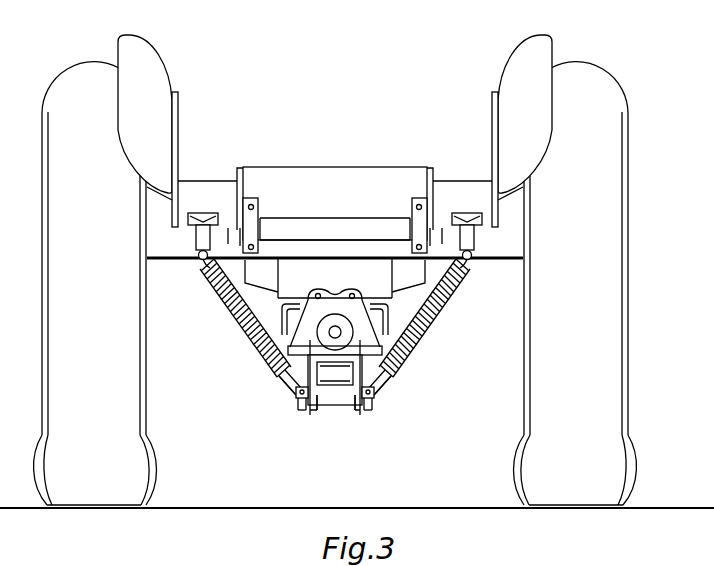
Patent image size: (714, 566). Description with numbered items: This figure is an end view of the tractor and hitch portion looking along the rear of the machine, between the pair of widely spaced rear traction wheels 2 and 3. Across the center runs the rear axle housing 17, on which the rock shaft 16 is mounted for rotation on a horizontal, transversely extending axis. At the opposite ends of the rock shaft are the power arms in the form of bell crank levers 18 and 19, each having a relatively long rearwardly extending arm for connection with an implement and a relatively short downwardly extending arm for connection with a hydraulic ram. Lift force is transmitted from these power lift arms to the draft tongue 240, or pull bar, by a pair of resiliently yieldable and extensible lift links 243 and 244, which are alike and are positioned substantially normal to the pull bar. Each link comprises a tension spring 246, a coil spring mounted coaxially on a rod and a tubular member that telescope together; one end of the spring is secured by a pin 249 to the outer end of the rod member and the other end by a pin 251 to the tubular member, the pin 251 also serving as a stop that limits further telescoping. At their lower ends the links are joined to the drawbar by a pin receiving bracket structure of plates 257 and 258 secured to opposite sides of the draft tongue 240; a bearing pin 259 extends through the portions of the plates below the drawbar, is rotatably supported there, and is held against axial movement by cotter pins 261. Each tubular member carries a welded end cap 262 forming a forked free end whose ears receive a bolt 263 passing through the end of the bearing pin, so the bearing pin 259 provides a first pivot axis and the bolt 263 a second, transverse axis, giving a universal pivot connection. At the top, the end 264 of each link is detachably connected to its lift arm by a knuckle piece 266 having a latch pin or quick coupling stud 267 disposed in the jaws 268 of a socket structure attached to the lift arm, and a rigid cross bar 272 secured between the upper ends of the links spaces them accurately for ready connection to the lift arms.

The rear traction wheel 2 is at (52, 355).
The rear traction wheel 3 is at (626, 355).
The rock shaft 16 is at (328, 229).
The rear axle housing 17 is at (303, 170).
The bell crank lever 18 is at (236, 272).
The bell crank lever 19 is at (432, 272).
The rigid cross bar 272 is at (305, 252).
The latch pin 267 is at (200, 224).
The jaws 268 is at (197, 249).
The knuckle piece 266 is at (205, 264).
The end of lift transmitting link 264 is at (212, 279).
The pin 249 is at (235, 300).
The tension spring 246 is at (252, 333).
The draft tongue 240 is at (312, 362).
The pin 251 is at (283, 375).
The lift link 243 is at (290, 381).
The lift link 244 is at (392, 378).
The end cap 262 is at (299, 398).
The bolt 263 is at (305, 410).
The cotter pins 261 is at (340, 406).
The plate 257 is at (320, 412).
The bearing pin 259 is at (302, 412).
The plate 258 is at (370, 412).